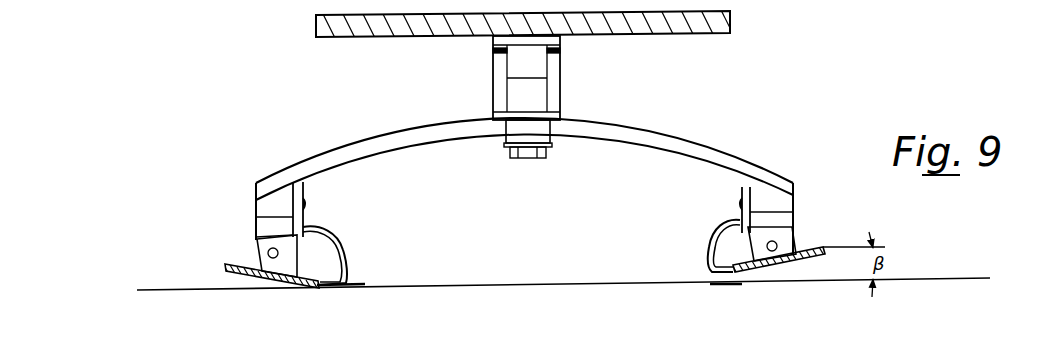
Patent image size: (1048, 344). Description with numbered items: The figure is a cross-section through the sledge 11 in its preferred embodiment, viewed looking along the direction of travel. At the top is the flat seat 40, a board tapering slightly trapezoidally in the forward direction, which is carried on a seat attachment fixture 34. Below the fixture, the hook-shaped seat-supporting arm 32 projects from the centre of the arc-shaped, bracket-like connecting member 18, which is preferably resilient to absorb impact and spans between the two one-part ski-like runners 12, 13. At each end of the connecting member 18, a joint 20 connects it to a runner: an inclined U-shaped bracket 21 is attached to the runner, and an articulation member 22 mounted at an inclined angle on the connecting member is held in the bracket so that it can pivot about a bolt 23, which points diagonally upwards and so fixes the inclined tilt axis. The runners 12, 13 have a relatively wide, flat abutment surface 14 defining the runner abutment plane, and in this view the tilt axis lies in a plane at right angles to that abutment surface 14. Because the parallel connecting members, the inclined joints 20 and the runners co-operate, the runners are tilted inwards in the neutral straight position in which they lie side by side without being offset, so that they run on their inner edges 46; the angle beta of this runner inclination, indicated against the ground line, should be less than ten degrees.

The sledge 11 is at (773, 76).
The runner 12 is at (237, 276).
The runner 13 is at (787, 268).
The abutment surface 14 is at (267, 278).
The connecting member 18 is at (655, 140).
The joint 20 is at (233, 207).
The bracket 21 is at (260, 255).
The articulation member 22 is at (268, 207).
The bolt 23 is at (778, 244).
The seat-supporting arm 32 is at (547, 115).
The seat attachment fixture 34 is at (558, 38).
The seat 40 is at (682, 26).
The inner edge 46 is at (722, 285).